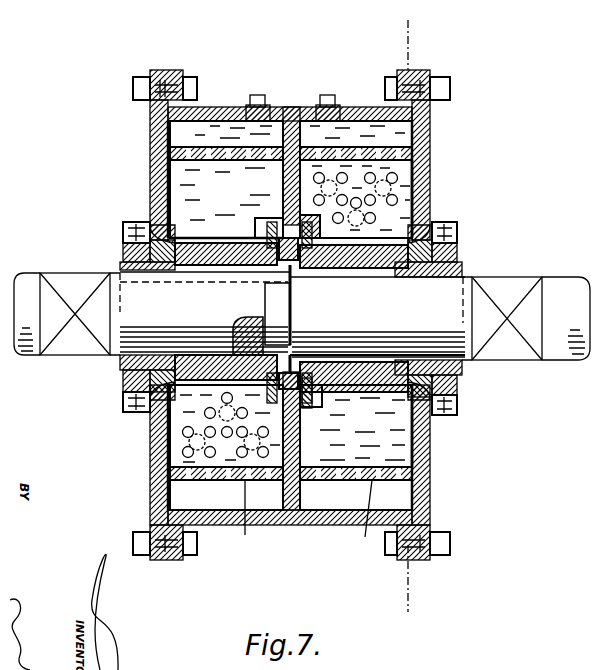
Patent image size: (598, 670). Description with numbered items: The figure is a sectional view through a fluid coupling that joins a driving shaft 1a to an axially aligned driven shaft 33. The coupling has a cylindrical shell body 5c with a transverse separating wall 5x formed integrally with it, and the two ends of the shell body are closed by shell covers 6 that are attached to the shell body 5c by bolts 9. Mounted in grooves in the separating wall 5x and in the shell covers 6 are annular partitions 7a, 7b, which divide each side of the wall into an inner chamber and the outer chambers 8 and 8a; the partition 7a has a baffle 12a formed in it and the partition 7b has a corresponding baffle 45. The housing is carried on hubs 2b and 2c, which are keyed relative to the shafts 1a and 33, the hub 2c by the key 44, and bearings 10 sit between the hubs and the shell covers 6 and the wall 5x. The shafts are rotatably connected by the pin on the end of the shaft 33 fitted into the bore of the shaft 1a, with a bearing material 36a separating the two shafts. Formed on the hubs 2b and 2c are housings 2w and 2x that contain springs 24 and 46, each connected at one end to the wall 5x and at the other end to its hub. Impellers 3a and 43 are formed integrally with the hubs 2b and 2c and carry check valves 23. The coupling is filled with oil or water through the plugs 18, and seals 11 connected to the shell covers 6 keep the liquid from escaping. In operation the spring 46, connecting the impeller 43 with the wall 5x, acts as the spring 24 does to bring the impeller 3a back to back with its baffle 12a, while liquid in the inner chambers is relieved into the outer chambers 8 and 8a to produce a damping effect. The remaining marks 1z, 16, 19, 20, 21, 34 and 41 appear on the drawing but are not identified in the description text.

The shaft 1a is at (32, 270).
The shaft collar 1z is at (118, 267).
The hub 2b is at (212, 258).
The hub 2c is at (347, 255).
The housing 2w is at (250, 232).
The housing 2x is at (323, 416).
The impeller 3a is at (185, 417).
The cylindrical shell body 5c is at (285, 107).
The transverse separating wall 5x is at (285, 179).
The shell cover 6 is at (150, 142).
The annular partition 7a is at (213, 480).
The annular partition 7b is at (345, 480).
The outer chamber 8 is at (301, 316).
The outer chamber 8a is at (359, 316).
The bolts 9 is at (135, 82).
The bearing 10 is at (160, 265).
The seal 11 is at (123, 242).
The baffle 12a is at (178, 182).
The perforation 16 is at (304, 518).
The plug 18 is at (253, 100).
The perforated plate 19 is at (256, 121).
The bearing block 20 is at (70, 270).
The shaft portion 21 is at (178, 263).
The check valve 23 is at (390, 190).
The spring 24 is at (263, 225).
The shaft 33 is at (557, 275).
The bearing block 34 is at (507, 277).
The bearing material 36a is at (293, 335).
The fluid level 41 is at (204, 175).
The impeller 43 is at (408, 203).
The key 44 is at (370, 363).
The baffle 45 is at (400, 438).
The spring 46 is at (354, 227).